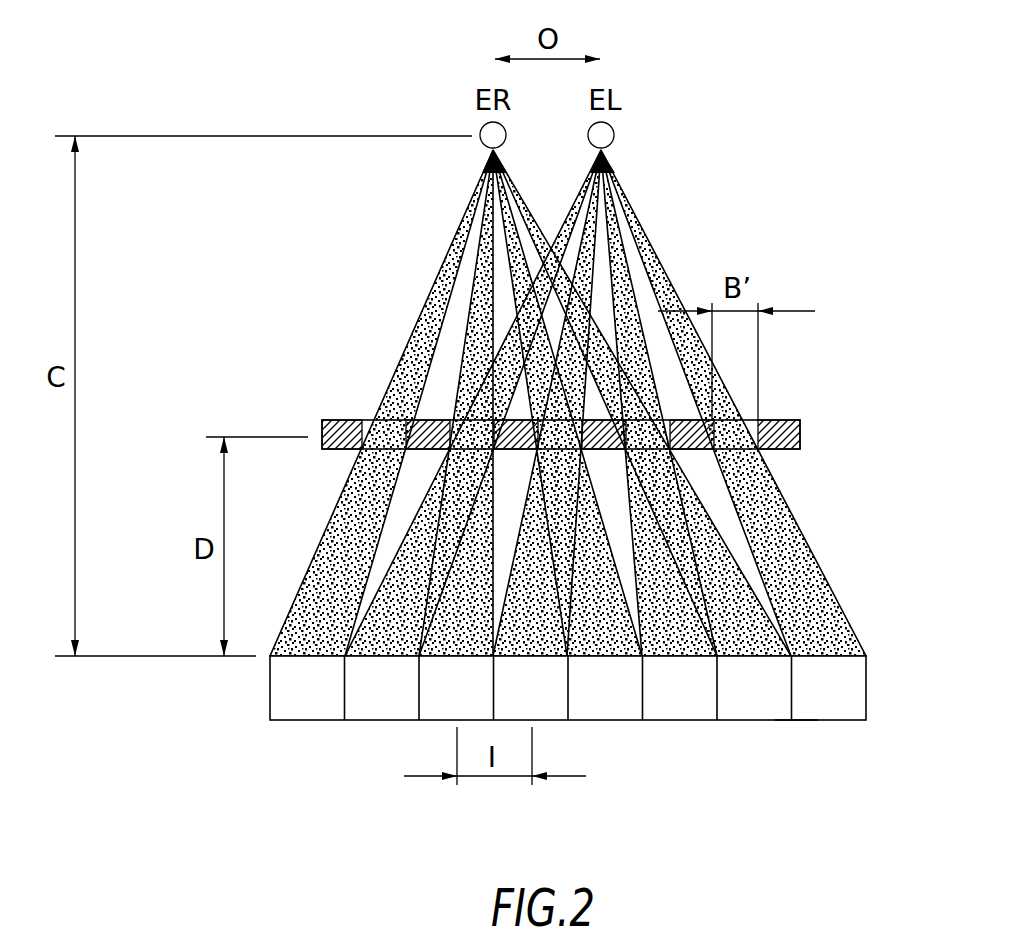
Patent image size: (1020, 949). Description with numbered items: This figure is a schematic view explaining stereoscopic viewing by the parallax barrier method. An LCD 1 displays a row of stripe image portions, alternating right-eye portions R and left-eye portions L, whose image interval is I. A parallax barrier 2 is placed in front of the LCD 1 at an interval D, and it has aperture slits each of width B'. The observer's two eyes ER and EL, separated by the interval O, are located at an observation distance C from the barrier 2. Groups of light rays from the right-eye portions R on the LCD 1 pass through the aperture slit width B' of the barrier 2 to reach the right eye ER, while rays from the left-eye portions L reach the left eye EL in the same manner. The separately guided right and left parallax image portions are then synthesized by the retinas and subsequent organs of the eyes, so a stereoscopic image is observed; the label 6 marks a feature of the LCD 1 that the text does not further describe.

The LCD 1 is at (867, 683).
The parallax barrier 2 is at (800, 424).
The pixel boundary / sub-pixel pitch 6 is at (815, 720).